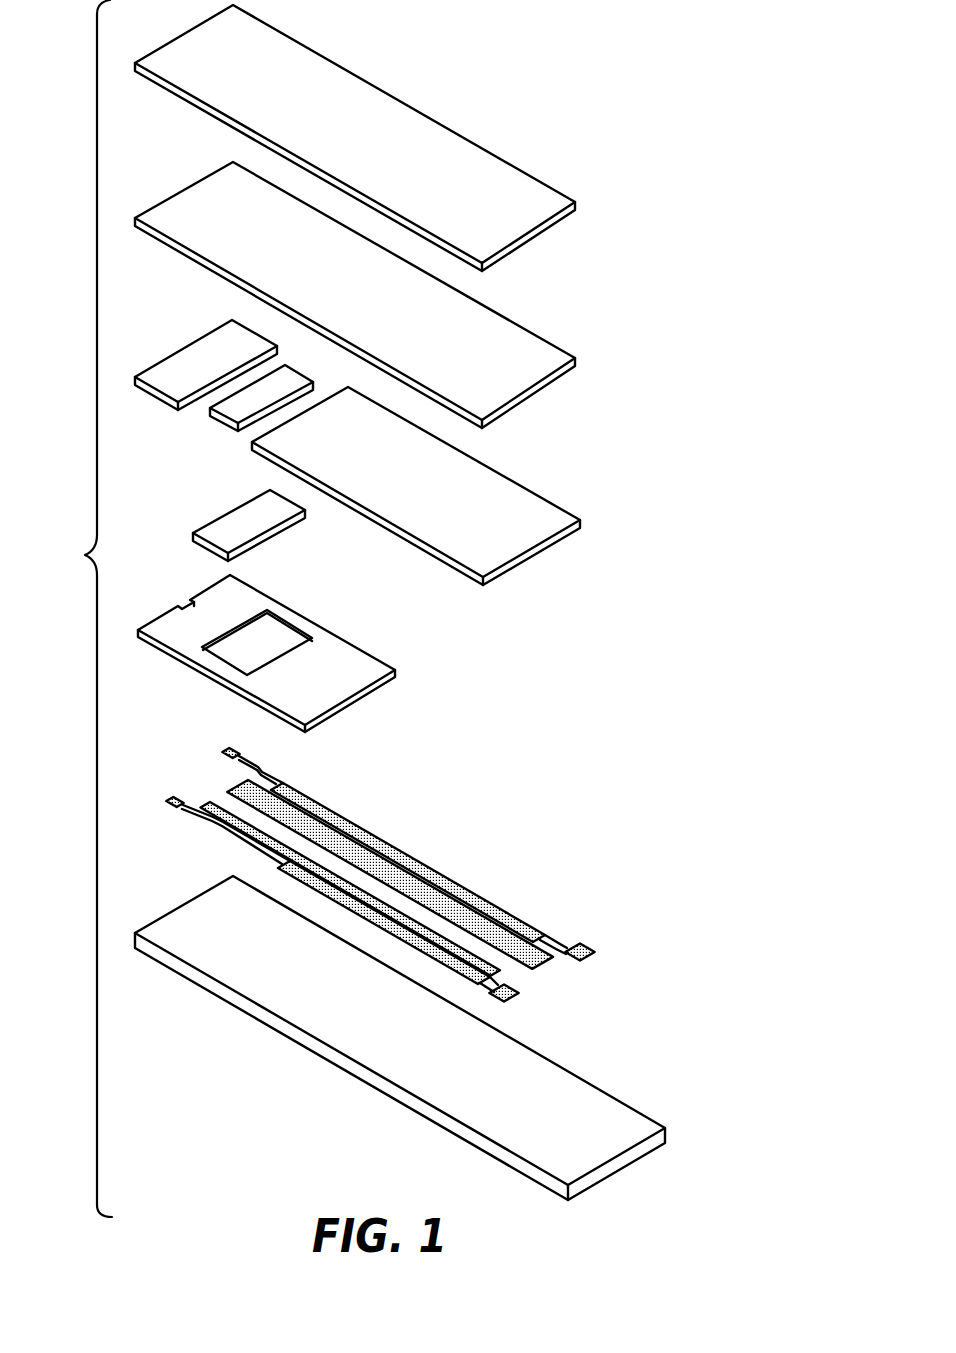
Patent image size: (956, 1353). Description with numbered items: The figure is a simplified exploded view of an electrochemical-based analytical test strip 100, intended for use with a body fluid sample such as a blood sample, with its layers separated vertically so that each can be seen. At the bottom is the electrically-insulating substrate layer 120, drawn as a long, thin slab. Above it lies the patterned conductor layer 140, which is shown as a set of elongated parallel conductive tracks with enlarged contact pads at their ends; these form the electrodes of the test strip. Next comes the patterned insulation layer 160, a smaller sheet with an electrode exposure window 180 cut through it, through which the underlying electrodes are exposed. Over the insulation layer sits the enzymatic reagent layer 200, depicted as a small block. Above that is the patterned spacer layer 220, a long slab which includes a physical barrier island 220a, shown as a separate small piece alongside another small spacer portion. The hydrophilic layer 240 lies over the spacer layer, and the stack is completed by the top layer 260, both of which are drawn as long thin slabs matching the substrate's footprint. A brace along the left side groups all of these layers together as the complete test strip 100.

The electrochemical-based analytical test strip 100 is at (74, 608).
The electrically-insulating substrate layer 120 is at (597, 1083).
The patterned conductor layer 140 is at (525, 900).
The patterned insulation layer 160 is at (312, 653).
The electrode exposure window 180 is at (270, 643).
The enzymatic reagent layer 200 is at (227, 513).
The patterned spacer layer 220 is at (528, 480).
The physical barrier island 220a is at (220, 423).
The hydrophilic layer 240 is at (528, 324).
The top layer 260 is at (528, 165).